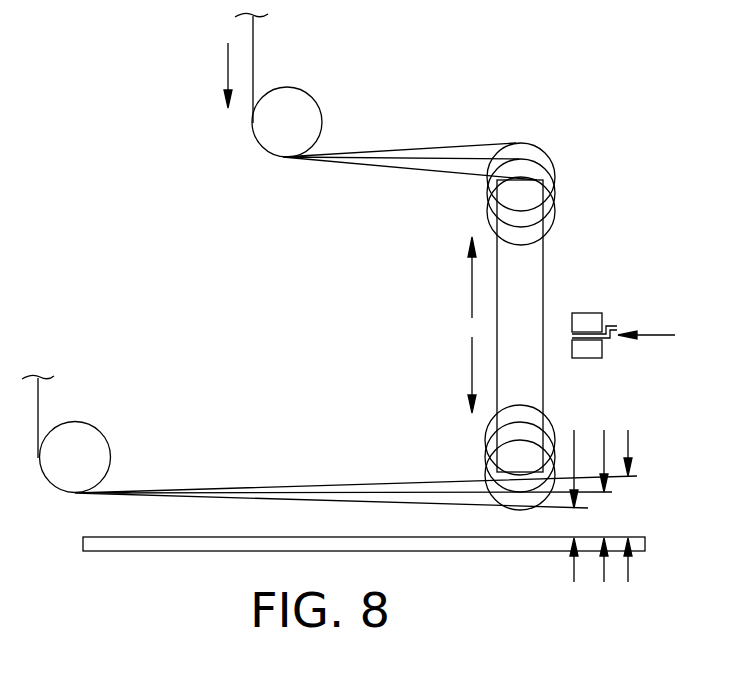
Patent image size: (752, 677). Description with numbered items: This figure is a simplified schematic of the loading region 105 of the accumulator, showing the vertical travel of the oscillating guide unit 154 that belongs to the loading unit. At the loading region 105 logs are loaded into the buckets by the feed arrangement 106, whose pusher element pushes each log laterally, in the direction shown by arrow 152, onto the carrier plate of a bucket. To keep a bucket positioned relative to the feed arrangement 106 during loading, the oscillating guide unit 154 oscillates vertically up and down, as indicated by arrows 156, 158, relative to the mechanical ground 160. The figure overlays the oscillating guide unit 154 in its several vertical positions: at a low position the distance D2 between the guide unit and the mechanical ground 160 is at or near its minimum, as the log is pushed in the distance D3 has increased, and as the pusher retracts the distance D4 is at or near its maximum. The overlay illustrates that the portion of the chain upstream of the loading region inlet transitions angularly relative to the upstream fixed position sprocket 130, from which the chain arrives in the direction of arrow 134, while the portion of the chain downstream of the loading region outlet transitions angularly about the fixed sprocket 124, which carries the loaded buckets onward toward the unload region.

The loading region 105 is at (592, 183).
The feed arrangement 106 is at (608, 280).
The fixed sprocket 124 is at (83, 430).
The fixed position sprocket 130 is at (313, 110).
The arrow 134 is at (228, 67).
The arrow 152 is at (656, 335).
The oscillating guide unit 154 is at (511, 114).
The arrow 156 is at (472, 285).
The arrow 158 is at (472, 365).
The mechanical ground 160 is at (515, 545).
The distance D2 is at (575, 445).
The distance D3 is at (605, 442).
The distance D4 is at (630, 438).